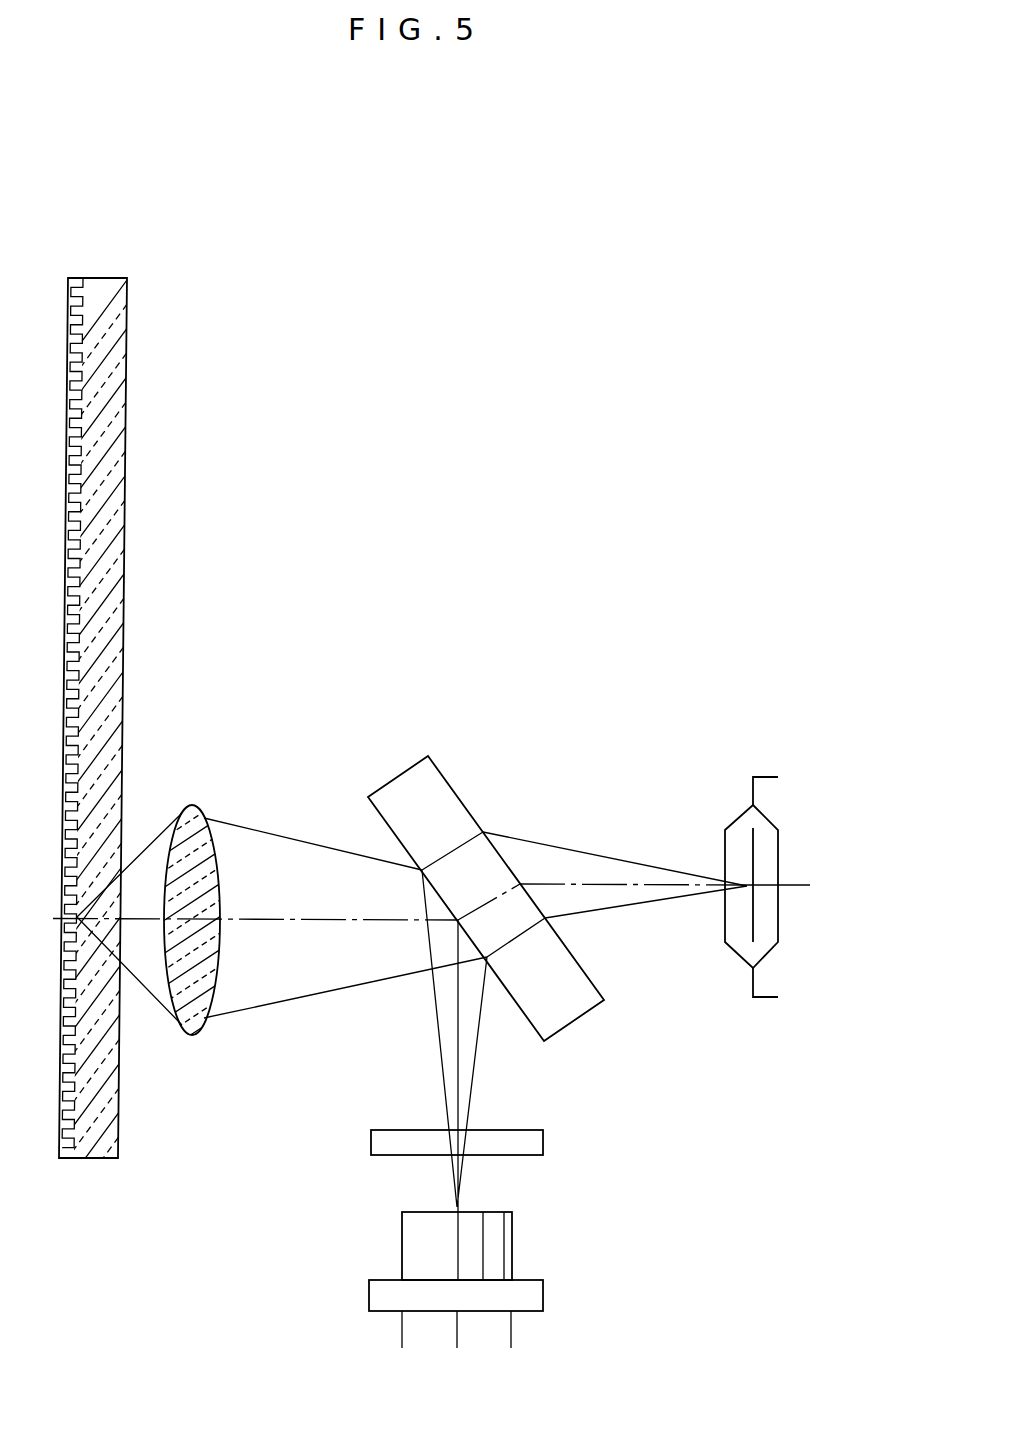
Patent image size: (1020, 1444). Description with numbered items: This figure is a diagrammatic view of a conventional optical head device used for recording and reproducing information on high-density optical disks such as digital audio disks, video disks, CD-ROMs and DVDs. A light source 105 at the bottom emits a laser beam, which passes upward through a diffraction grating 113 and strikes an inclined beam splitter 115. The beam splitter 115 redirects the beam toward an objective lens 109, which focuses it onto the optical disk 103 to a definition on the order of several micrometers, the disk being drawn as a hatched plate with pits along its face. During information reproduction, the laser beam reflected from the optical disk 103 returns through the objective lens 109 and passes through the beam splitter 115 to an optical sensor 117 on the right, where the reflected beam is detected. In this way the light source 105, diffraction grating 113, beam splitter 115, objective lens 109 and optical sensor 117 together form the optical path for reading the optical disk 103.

The optical disk 103 is at (122, 323).
The light source 105 is at (512, 1238).
The objective lens 109 is at (188, 803).
The diffraction grating 113 is at (545, 1142).
The beam splitter 115 is at (440, 775).
The optical sensor 117 is at (778, 822).